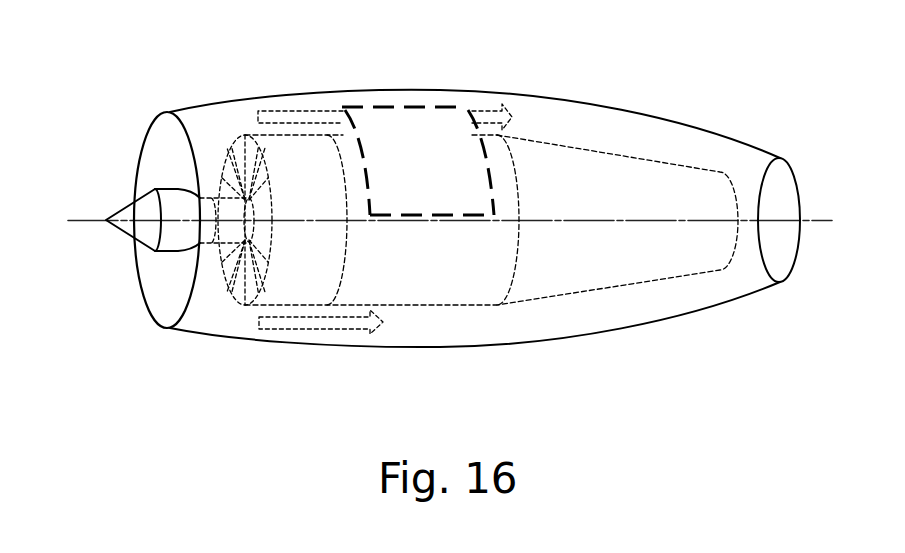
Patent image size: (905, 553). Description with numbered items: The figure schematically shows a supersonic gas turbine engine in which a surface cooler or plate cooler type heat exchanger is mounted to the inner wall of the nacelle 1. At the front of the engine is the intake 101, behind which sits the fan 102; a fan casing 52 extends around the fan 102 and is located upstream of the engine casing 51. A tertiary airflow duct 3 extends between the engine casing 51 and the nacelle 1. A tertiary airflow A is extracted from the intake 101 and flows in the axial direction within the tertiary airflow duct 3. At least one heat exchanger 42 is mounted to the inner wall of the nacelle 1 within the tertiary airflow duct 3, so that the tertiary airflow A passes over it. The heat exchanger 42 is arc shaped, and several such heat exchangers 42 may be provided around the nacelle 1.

The nacelle 1 is at (528, 97).
The tertiary airflow duct 3 is at (413, 331).
The heat exchanger 42 is at (426, 120).
The engine casing 51 is at (465, 306).
The fan casing 52 is at (258, 308).
The intake 101 is at (155, 158).
The fan 102 is at (230, 298).
The tertiary airflow A is at (320, 331).